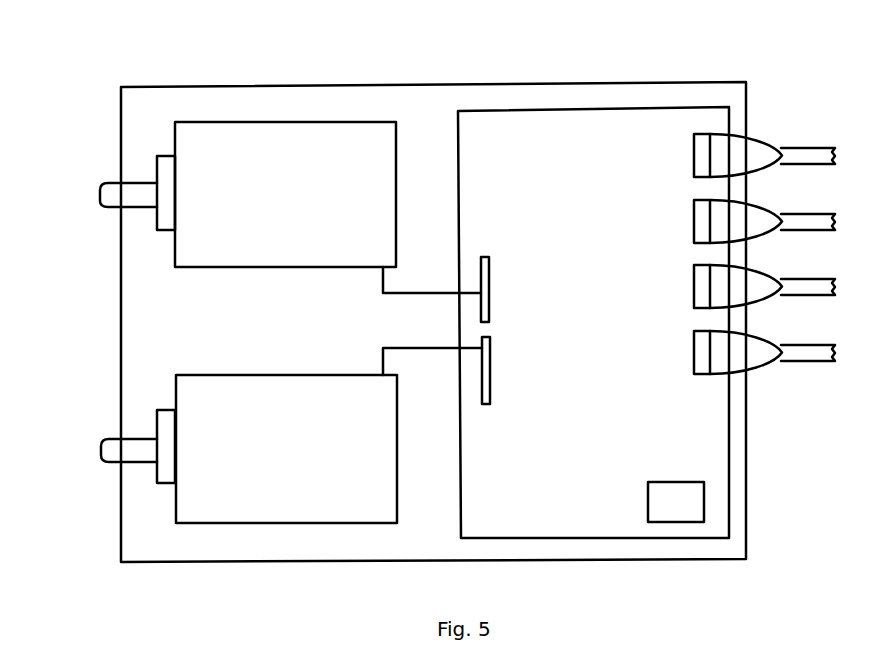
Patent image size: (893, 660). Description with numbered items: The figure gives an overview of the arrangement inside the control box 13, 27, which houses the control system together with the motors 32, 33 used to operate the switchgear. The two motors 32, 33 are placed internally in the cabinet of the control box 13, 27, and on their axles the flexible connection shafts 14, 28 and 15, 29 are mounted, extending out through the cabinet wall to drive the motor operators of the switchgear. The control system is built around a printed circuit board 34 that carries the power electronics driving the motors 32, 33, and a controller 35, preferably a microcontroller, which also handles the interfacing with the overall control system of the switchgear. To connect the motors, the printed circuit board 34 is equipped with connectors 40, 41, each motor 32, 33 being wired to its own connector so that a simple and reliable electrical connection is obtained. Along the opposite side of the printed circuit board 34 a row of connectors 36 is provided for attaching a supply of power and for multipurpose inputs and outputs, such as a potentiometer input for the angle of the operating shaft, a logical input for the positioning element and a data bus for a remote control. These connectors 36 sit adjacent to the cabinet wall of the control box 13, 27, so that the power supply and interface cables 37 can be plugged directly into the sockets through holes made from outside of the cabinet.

The control box 13 is at (416, 285).
The control box 27 is at (178, 53).
The flexible connection shaft 14 is at (109, 185).
The flexible connection shaft 28 is at (113, 190).
The flexible connection shaft 15 is at (111, 438).
The flexible connection shaft 29 is at (118, 448).
The motor 32 is at (287, 135).
The motor 33 is at (268, 512).
The printed circuit board 34 is at (608, 145).
The controller 35 is at (683, 508).
The connectors 36 is at (701, 140).
The power supply and interface cables 37 is at (780, 147).
The connector 40 is at (484, 260).
The connector 41 is at (488, 403).